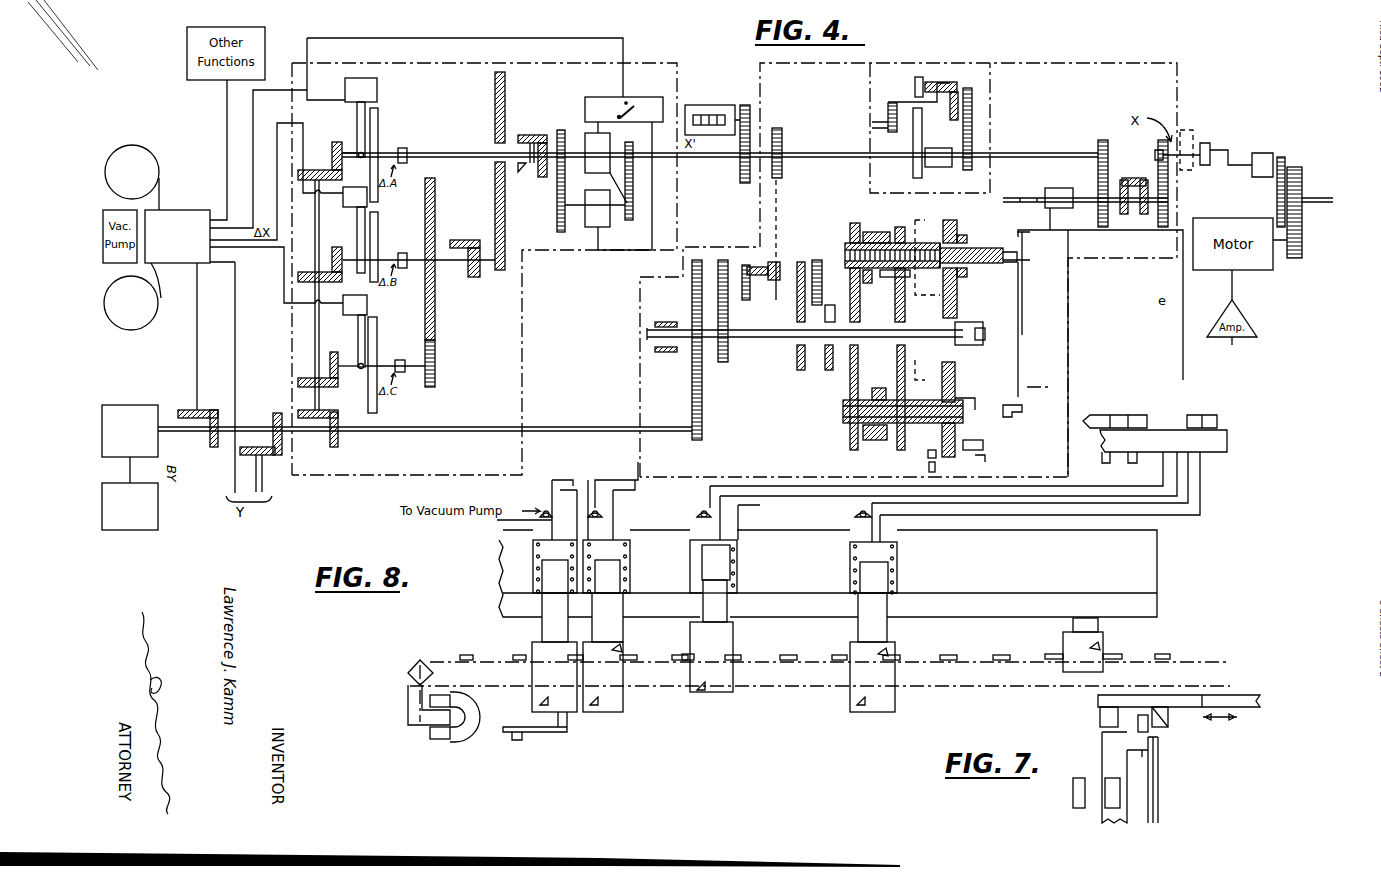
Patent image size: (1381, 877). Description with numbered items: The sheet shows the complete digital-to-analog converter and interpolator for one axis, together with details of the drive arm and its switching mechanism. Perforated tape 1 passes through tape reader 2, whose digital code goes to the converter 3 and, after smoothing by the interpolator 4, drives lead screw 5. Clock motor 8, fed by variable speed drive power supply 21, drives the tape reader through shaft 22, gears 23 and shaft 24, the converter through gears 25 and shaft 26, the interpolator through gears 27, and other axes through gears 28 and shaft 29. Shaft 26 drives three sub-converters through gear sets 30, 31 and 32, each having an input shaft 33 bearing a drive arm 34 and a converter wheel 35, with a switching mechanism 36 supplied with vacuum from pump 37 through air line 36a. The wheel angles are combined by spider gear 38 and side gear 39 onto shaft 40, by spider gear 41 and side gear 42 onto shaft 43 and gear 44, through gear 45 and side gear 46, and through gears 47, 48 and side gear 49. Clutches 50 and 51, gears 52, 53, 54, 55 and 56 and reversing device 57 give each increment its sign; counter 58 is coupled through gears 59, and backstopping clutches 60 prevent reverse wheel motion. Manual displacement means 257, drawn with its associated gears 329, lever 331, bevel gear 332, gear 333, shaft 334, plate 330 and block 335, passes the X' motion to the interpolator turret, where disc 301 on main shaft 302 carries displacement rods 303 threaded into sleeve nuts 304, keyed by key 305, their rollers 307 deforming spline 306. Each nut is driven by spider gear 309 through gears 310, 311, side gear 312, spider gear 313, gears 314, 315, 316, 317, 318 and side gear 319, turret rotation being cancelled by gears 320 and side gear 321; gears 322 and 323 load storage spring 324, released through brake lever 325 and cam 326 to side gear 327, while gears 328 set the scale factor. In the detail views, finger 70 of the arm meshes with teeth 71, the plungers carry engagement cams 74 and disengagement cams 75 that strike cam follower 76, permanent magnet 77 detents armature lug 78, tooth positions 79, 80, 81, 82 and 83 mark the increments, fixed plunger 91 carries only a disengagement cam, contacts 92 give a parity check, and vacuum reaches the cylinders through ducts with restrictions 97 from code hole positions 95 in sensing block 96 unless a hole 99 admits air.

In FIG. 4, the perforated tape 1 is at (164, 206).
In FIG. 8, the perforated tape 1 is at (1208, 415).
In FIG. 4, the tape reader 2 is at (176, 268).
In FIG. 8, the tape reader 2 is at (1236, 448).
In FIG. 4, the digital-to-analog converter 3 is at (378, 477).
In FIG. 4, the interpolator 4 is at (640, 283).
In FIG. 4, the lead screw 5 is at (1322, 196).
In FIG. 4, the clock motor 8 is at (150, 404).
In FIG. 4, the variable speed drive power supply 21 is at (125, 478).
In FIG. 4, the shaft 22 is at (182, 431).
In FIG. 4, the gears 23 is at (224, 412).
In FIG. 4, the shaft 24 is at (183, 346).
In FIG. 4, the gears 25 is at (336, 410).
In FIG. 4, the shaft 26 is at (304, 405).
In FIG. 4, the gears 27 is at (706, 434).
In FIG. 4, the gears 28 is at (279, 456).
In FIG. 4, the shaft 29 is at (256, 474).
In FIG. 4, the gear set 30 is at (312, 168).
In FIG. 4, the gear set 31 is at (309, 270).
In FIG. 4, the gear set 32 is at (300, 377).
In FIG. 4, the input shaft 33 is at (358, 177).
In FIG. 4, the drive arm 34 is at (356, 134).
In FIG. 7, the drive arm 34 is at (1102, 758).
In FIG. 4, the converter wheel 35 is at (378, 138).
In FIG. 7, the converter wheel 35 is at (1158, 793).
In FIG. 4, the drive arm switching mechanism 36 is at (380, 94).
In FIG. 8, the drive arm switching mechanism 36 is at (484, 572).
In FIG. 4, the air line 36a is at (171, 286).
In FIG. 8, the air line 36a is at (500, 526).
In FIG. 4, the vacuum pump 37 is at (127, 268).
In FIG. 4, the differential spider gear 38 is at (537, 134).
In FIG. 4, the differential side gear 39 is at (526, 172).
In FIG. 4, the shaft 40 is at (545, 178).
In FIG. 4, the spider gear 41 is at (457, 240).
In FIG. 4, the side gear 42 is at (470, 278).
In FIG. 4, the shaft 43 is at (478, 242).
In FIG. 4, the gear 44 is at (496, 257).
In FIG. 4, the gear 45 is at (496, 237).
In FIG. 4, the side gear 46 is at (496, 181).
In FIG. 4, the gear 47 is at (435, 374).
In FIG. 4, the gear 48 is at (435, 334).
In FIG. 4, the side gear 49 is at (455, 277).
In FIG. 4, the clutch 50 is at (633, 210).
In FIG. 4, the clutch 51 is at (590, 227).
In FIG. 4, the gear 52 is at (562, 130).
In FIG. 4, the gear 53 is at (558, 226).
In FIG. 4, the gear 54 is at (608, 183).
In FIG. 4, the gear 55 is at (633, 185).
In FIG. 4, the gear 56 is at (630, 220).
In FIG. 4, the reversing device 57 is at (586, 98).
In FIG. 4, the counter 58 is at (712, 104).
In FIG. 4, the gears 59 is at (741, 172).
In FIG. 4, the backstopping clutch 60 is at (405, 150).
In FIG. 4, the manual displacement means 257 is at (903, 91).
In FIG. 4, the disc 301 is at (982, 456).
In FIG. 4, the main shaft 302 is at (647, 338).
In FIG. 4, the displacement rod 303 is at (971, 403).
In FIG. 4, the sleeve nut 304 is at (850, 240).
In FIG. 4, the key 305 is at (972, 443).
In FIG. 4, the spline 306 is at (1016, 377).
In FIG. 4, the spline guide roller 307 is at (1022, 412).
In FIG. 4, the differential spider gear 309 is at (872, 443).
In FIG. 4, the gear 310 is at (782, 178).
In FIG. 4, the gear 311 is at (782, 262).
In FIG. 4, the side gear 312 is at (770, 264).
In FIG. 4, the spider gear 313 is at (744, 266).
In FIG. 4, the gear 314 is at (828, 254).
In FIG. 4, the gear 315 is at (840, 295).
In FIG. 4, the gear 316 is at (825, 360).
In FIG. 4, the gear 317 is at (850, 382).
In FIG. 4, the gear 318 is at (850, 404).
In FIG. 4, the side gear 319 is at (858, 384).
In FIG. 4, the gears 320 is at (760, 323).
In FIG. 4, the side gear 321 is at (693, 295).
In FIG. 4, the gear 322 is at (800, 325).
In FIG. 4, the gear 323 is at (953, 313).
In FIG. 4, the storage spring 324 is at (922, 300).
In FIG. 4, the brake lever 325 is at (928, 455).
In FIG. 4, the cam 326 is at (936, 464).
In FIG. 4, the side gear 327 is at (880, 316).
In FIG. 4, the gears 328 is at (1194, 126).
In FIG. 4, the gear 329 is at (888, 130).
In FIG. 4, the plate 330 is at (955, 143).
In FIG. 4, the lever 331 is at (923, 78).
In FIG. 4, the bevel gear 332 is at (960, 70).
In FIG. 4, the gear 333 is at (973, 86).
In FIG. 4, the shaft 334 is at (980, 125).
In FIG. 4, the block 335 is at (930, 167).
In FIG. 8, the finger 70 is at (404, 668).
In FIG. 7, the finger 70 is at (1138, 744).
In FIG. 8, the teeth 71 is at (467, 654).
In FIG. 7, the teeth 71 is at (1160, 754).
In FIG. 7, the engagement cam 74 is at (1100, 718).
In FIG. 8, the disengagement cam 75 is at (1099, 646).
In FIG. 7, the disengagement cam 75 is at (1167, 722).
In FIG. 8, the cam follower 76 is at (422, 658).
In FIG. 7, the cam follower 76 is at (1130, 705).
In FIG. 8, the permanent magnet 77 is at (536, 584).
In FIG. 7, the permanent magnet 77 is at (1110, 810).
In FIG. 8, the armature lug 78 is at (426, 726).
In FIG. 7, the armature lug 78 is at (1104, 790).
In FIG. 8, the tooth position 79 is at (684, 656).
In FIG. 8, the tooth position 80 is at (744, 656).
In FIG. 8, the tooth position 81 is at (806, 642).
In FIG. 8, the tooth position 82 is at (840, 654).
In FIG. 8, the tooth position 83 is at (896, 659).
In FIG. 8, the fixed plunger 91 is at (1063, 642).
In FIG. 8, the contacts 92 is at (529, 752).
In FIG. 8, the code hole position 95 is at (1205, 440).
In FIG. 8, the sensing block 96 is at (1217, 456).
In FIG. 8, the restriction 97 is at (700, 511).
In FIG. 8, the hole 99 is at (1140, 418).